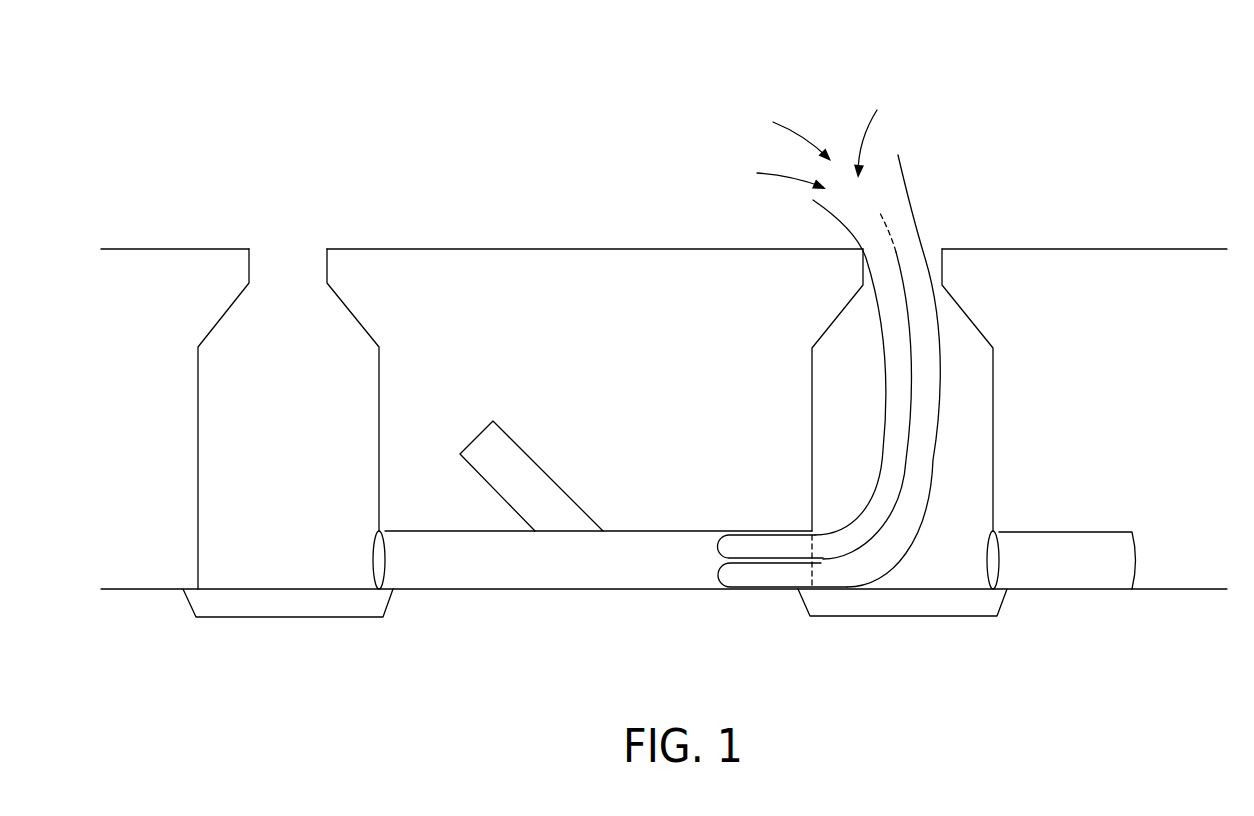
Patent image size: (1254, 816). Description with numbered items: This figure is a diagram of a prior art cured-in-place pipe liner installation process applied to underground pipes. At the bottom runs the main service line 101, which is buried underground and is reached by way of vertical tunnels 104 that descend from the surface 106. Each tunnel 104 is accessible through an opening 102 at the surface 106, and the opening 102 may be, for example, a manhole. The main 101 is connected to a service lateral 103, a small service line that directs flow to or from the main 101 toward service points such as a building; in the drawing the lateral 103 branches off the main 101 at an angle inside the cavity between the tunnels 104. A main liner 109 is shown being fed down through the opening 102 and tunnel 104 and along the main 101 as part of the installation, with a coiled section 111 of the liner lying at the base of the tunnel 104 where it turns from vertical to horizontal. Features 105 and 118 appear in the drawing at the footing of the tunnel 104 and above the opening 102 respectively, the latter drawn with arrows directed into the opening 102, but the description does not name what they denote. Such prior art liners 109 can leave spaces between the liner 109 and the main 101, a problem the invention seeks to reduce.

The main service line 101 is at (620, 530).
The opening 102 is at (930, 245).
The service lateral 103 is at (512, 457).
The vertical tunnel 104 is at (362, 403).
The bond pad 105 is at (836, 573).
The surface 106 is at (637, 228).
The main liner 109 is at (898, 197).
The fiber coil 111 is at (714, 547).
The external light 118 is at (835, 100).